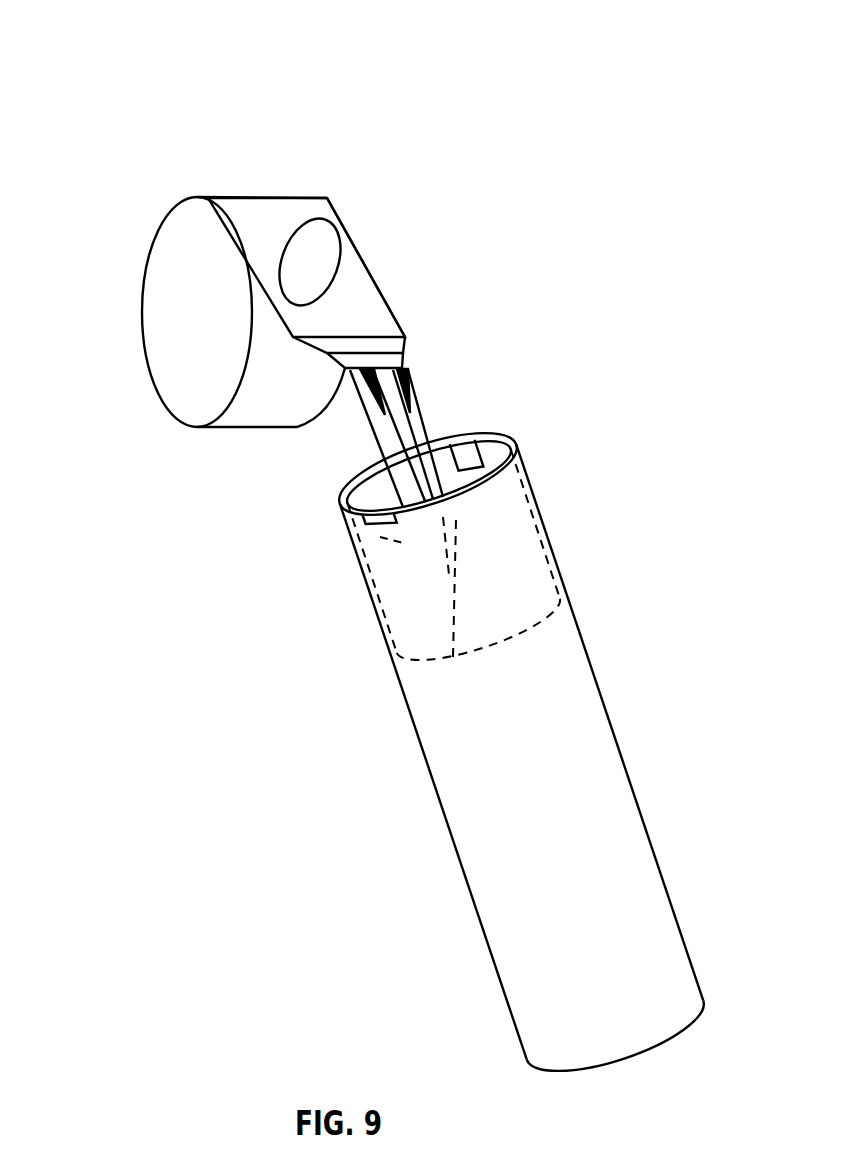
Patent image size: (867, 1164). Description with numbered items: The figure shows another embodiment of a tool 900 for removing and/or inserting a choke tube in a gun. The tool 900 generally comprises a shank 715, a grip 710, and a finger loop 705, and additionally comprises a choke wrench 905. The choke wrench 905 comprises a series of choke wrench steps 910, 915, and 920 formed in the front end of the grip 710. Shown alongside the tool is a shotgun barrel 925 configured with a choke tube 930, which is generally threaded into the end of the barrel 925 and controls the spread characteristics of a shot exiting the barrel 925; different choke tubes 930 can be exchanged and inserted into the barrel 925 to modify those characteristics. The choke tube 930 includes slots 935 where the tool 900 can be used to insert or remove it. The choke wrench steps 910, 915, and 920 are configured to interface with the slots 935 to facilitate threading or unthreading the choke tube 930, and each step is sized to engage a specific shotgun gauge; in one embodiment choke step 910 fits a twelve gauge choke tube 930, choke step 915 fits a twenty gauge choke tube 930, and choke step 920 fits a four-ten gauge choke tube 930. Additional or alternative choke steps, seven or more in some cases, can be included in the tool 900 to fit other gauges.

The tool 900 is at (399, 96).
The finger loop 705 is at (147, 243).
The grip 710 is at (286, 217).
The choke wrench 905 is at (398, 286).
The choke wrench step 910 is at (398, 318).
The choke wrench step 915 is at (399, 341).
The choke wrench step 920 is at (346, 369).
The barrel 925 is at (603, 728).
The choke tube 930 is at (534, 582).
The slots 935 is at (470, 450).
The shank 715 is at (428, 593).